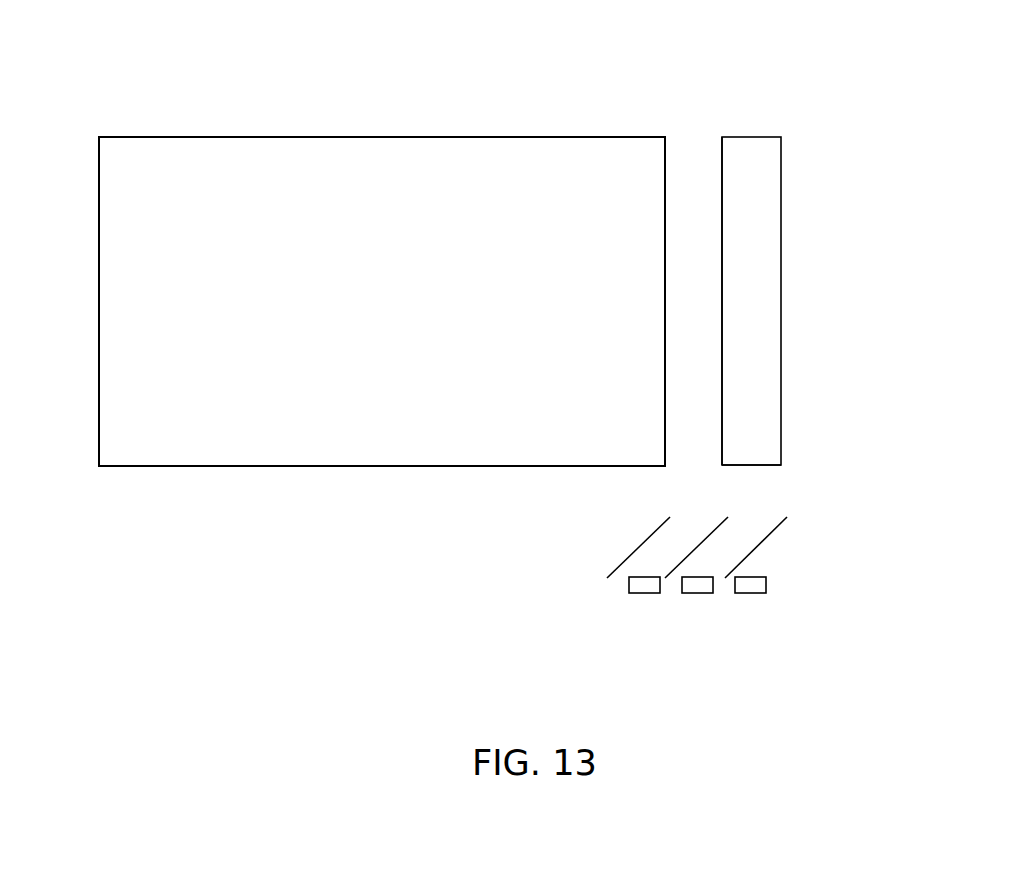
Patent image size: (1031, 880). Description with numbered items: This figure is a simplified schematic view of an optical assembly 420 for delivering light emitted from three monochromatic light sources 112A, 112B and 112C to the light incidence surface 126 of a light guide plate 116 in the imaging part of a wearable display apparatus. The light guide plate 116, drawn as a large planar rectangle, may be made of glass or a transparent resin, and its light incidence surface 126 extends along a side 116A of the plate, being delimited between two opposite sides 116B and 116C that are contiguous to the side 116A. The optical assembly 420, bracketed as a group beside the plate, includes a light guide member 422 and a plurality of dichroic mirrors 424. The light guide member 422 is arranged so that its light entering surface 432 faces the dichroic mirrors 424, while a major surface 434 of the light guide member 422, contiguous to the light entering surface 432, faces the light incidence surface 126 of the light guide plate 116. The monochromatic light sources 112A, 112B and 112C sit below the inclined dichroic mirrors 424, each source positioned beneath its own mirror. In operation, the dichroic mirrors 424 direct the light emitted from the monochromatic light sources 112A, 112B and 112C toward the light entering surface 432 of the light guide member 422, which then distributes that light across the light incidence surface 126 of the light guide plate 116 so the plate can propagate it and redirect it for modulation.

The light guide plate 116 is at (365, 300).
The side of the light guide plate 116A is at (669, 183).
The side of the light guide plate 116B is at (386, 494).
The side of the light guide plate 116C is at (386, 108).
The light incidence surface 126 is at (665, 437).
The optical assembly 420 is at (938, 127).
The light guide member 422 is at (800, 200).
The dichroic mirrors 424 is at (800, 551).
The light entering surface 432 is at (753, 465).
The major surface of the light guide member 434 is at (722, 157).
The monochromatic light source 112A is at (641, 593).
The monochromatic light source 112B is at (697, 593).
The monochromatic light source 112C is at (748, 593).